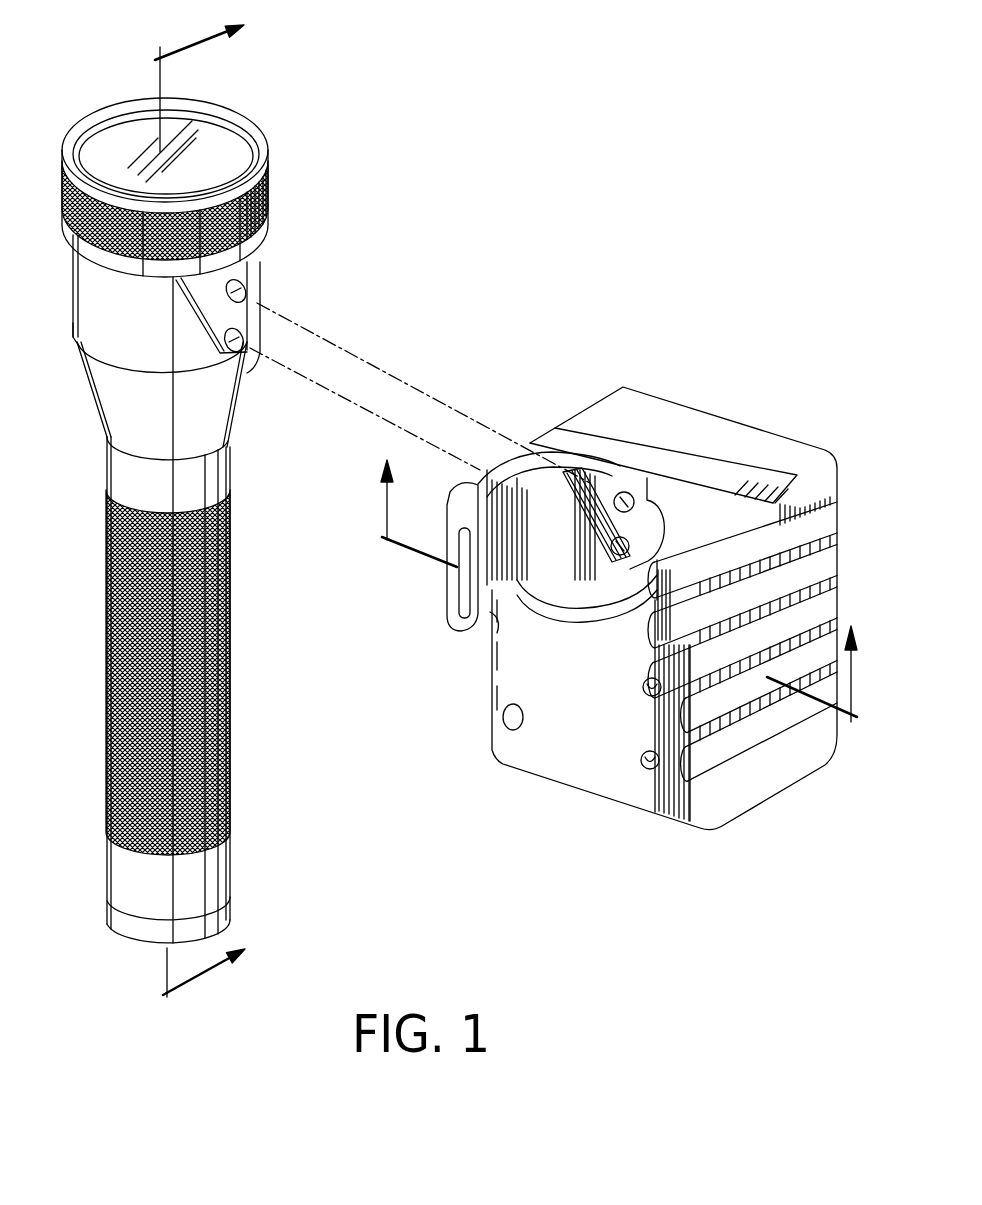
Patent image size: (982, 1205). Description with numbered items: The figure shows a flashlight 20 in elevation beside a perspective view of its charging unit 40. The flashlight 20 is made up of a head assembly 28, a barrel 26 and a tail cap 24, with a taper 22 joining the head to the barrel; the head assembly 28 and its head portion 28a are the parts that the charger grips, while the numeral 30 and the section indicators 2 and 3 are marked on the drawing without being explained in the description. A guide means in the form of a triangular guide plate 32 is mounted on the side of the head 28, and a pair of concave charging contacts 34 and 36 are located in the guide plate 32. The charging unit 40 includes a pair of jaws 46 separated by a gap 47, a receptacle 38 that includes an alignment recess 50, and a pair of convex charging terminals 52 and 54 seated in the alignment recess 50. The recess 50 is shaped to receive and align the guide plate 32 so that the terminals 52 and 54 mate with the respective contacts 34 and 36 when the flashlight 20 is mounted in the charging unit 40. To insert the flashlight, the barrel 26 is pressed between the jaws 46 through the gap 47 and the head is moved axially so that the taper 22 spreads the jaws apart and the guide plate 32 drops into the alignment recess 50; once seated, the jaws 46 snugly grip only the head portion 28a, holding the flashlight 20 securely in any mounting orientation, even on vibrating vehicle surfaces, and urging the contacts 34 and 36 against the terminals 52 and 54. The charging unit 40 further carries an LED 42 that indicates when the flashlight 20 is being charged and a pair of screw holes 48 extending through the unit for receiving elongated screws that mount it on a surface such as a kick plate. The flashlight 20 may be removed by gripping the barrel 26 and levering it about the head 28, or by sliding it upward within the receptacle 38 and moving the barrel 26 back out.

The flashlight 20 is at (98, 576).
The taper 22 is at (96, 400).
The tail cap 24 is at (226, 926).
The barrel 26 is at (232, 497).
The head assembly 28 is at (78, 266).
The head portion 28a is at (74, 328).
The flashlight head 30 is at (270, 185).
The triangular guide plate 32 is at (246, 308).
The concave charging contact 34 is at (244, 290).
The concave charging contact 36 is at (240, 350).
The receptacle 38 is at (449, 656).
The charging unit 40 is at (623, 829).
The LED 42 is at (644, 760).
The jaws 46 is at (450, 592).
The gap 47 is at (447, 557).
The screw holes 48 is at (494, 624).
The alignment recess 50 is at (617, 535).
The convex charging terminal 52 is at (634, 498).
The convex charging terminal 54 is at (632, 550).
The section line 2- 2 is at (618, 575).
The section line 3- 3 is at (208, 507).